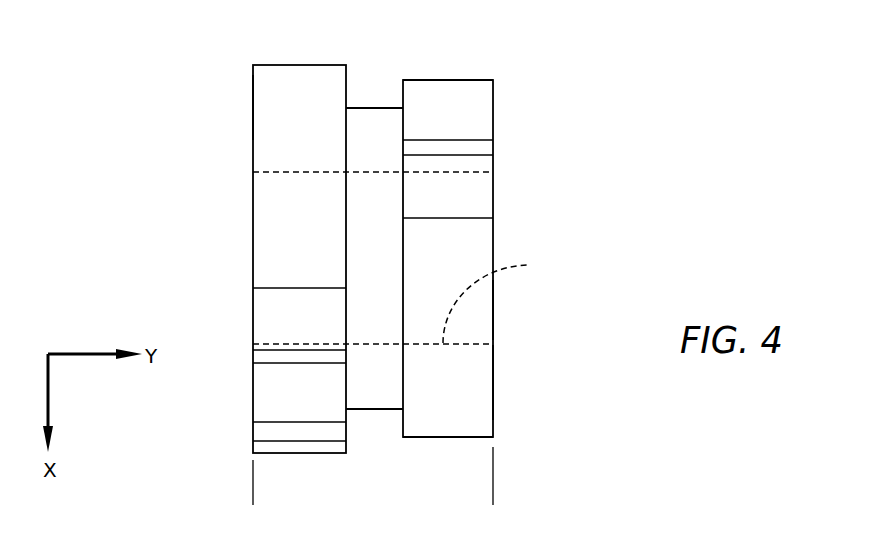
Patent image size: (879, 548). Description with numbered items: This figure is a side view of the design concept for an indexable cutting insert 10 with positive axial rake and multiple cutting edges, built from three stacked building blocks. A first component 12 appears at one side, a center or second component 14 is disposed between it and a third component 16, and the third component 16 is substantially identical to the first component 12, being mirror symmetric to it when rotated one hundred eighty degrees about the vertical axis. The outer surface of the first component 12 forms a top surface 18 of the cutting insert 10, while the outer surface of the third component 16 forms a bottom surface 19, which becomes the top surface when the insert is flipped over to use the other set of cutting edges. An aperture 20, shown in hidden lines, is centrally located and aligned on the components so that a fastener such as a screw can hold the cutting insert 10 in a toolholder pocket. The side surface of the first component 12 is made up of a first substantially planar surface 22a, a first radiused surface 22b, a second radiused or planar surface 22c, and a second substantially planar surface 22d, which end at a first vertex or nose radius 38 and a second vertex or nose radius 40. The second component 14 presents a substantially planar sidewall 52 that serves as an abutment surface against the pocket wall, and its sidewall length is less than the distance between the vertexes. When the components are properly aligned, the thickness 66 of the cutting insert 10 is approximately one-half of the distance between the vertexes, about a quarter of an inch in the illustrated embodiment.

The cutting insert 10 is at (624, 88).
The first component 12 is at (459, 64).
The second component 14 is at (380, 88).
The third component 16 is at (290, 50).
The top surface 18 is at (493, 365).
The bottom surface 19 is at (253, 107).
The aperture 20 is at (499, 298).
The first substantially planar surface 22a is at (482, 313).
The first radiused surface 22b is at (468, 197).
The second radiused or planar surface 22c is at (478, 148).
The second substantially planar surface 22d is at (468, 107).
The first vertex or nose radius 38 is at (493, 81).
The second vertex or nose radius 40 is at (493, 437).
The planar sidewall 52 is at (382, 266).
The thickness 66 is at (493, 495).